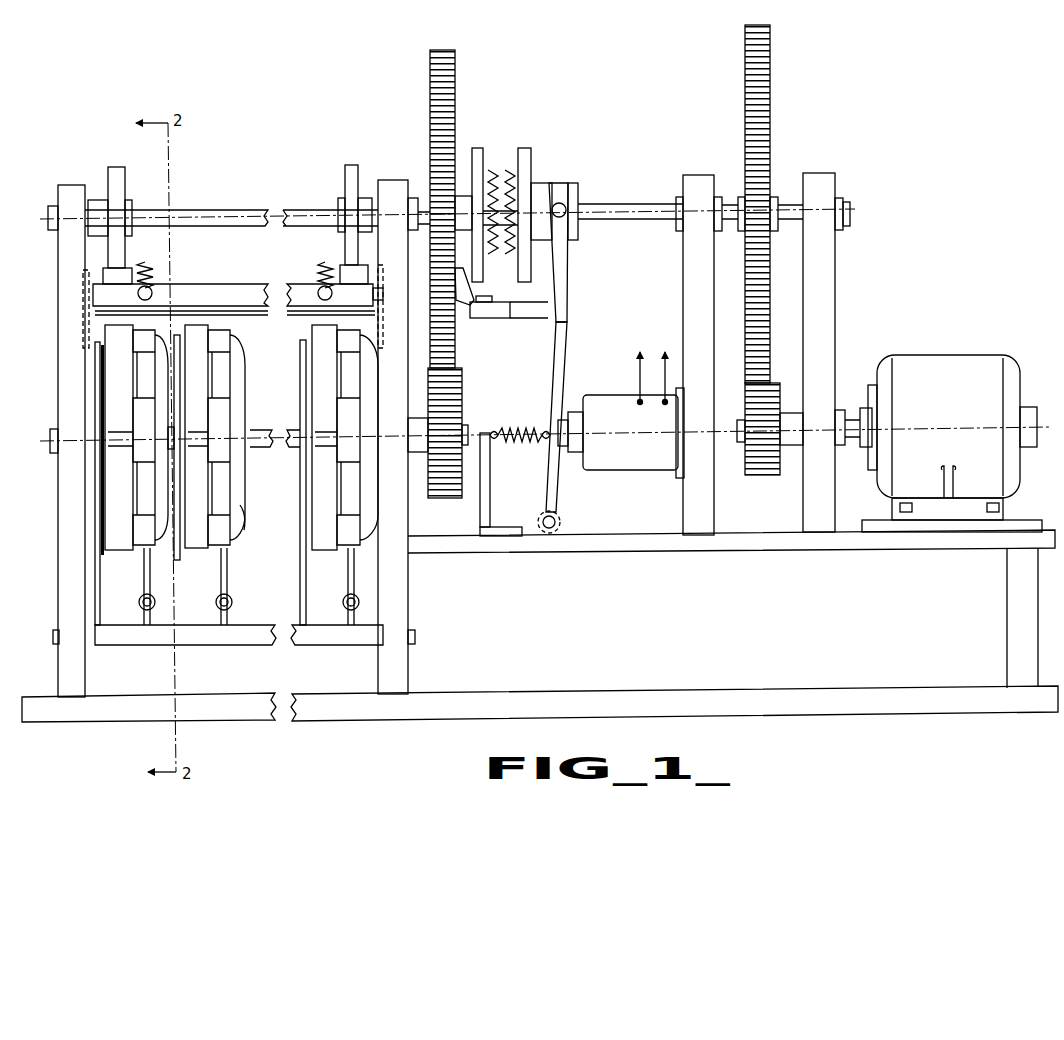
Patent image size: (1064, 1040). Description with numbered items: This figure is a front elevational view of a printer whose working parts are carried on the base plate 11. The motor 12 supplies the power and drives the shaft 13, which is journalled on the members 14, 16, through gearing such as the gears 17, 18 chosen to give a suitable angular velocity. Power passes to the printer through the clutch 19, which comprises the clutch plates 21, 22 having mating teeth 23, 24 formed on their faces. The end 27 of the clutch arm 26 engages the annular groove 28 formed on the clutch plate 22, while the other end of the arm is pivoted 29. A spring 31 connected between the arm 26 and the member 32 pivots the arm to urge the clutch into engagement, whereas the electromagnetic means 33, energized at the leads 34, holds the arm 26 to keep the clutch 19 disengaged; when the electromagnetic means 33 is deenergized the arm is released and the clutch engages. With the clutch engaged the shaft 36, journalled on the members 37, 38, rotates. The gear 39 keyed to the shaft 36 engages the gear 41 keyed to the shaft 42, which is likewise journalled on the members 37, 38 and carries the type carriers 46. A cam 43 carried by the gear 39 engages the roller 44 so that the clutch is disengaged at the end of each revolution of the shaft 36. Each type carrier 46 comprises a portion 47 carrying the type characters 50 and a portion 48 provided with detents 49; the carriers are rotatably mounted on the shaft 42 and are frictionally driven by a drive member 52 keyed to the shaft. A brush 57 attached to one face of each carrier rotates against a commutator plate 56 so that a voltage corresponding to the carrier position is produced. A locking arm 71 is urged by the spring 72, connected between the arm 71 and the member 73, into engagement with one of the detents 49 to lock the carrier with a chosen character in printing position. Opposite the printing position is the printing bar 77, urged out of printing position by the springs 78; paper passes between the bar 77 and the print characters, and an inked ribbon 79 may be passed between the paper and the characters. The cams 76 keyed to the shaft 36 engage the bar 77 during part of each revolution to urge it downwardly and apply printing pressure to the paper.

The base plate 11 is at (722, 696).
The motor 12 is at (951, 362).
The shaft 13 is at (645, 204).
The member 14 is at (685, 273).
The member 16 is at (828, 279).
The gear 17 is at (761, 473).
The gear 18 is at (772, 108).
The clutch 19 is at (517, 202).
The clutch plate 21 is at (478, 148).
The clutch plate 22 is at (524, 148).
The mating teeth 23 is at (497, 170).
The mating teeth 24 is at (509, 177).
The clutch arm 26 is at (563, 342).
The end of clutch arm 27 is at (569, 208).
The annular groove 28 is at (565, 186).
The pivot 29 is at (560, 520).
The spring 31 is at (522, 432).
The member 32 is at (490, 503).
The electromagnetic means 33 is at (636, 468).
The leads 34 is at (650, 376).
The shaft 36 is at (235, 211).
The member 37 is at (68, 352).
The member 38 is at (402, 594).
The gear 39 is at (432, 103).
The gear 41 is at (445, 500).
The shaft 42 is at (261, 431).
The cam 43 is at (456, 305).
The roller 44 is at (502, 318).
The type carrier 46 is at (202, 442).
The portion of type carrier 47 is at (113, 488).
The portion of type carrier 48 is at (138, 378).
The detents 49 is at (228, 470).
The type characters 50 is at (110, 556).
The drive member 52 is at (244, 512).
The commutator plate 56 is at (100, 582).
The brush 57 is at (100, 363).
The locking arm 71 is at (142, 576).
The spring 72 is at (234, 602).
The member 73 is at (233, 626).
The cams 76 is at (125, 179).
The printing bar 77 is at (228, 292).
The springs 78 is at (146, 266).
The inked ribbon 79 is at (255, 316).